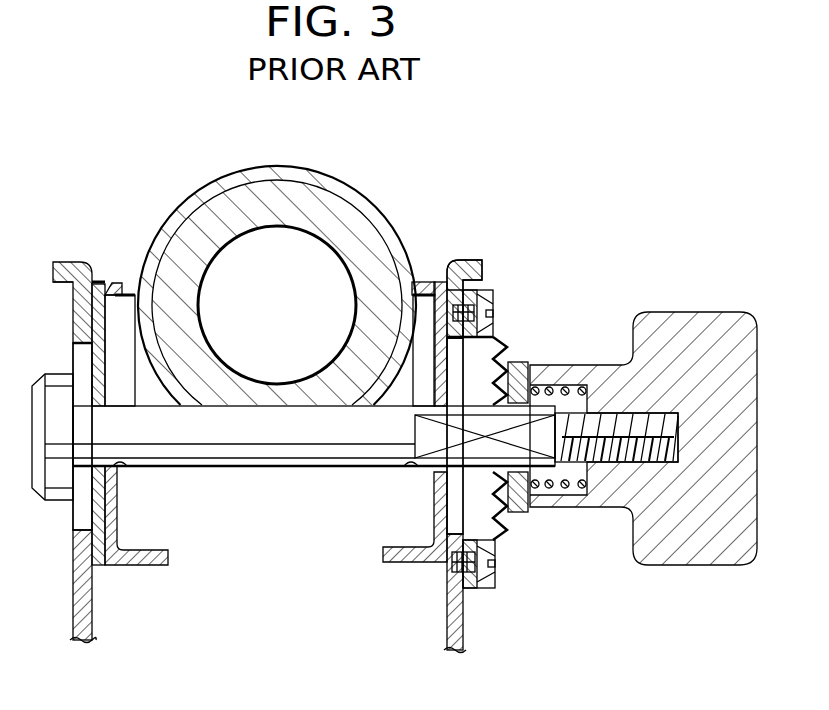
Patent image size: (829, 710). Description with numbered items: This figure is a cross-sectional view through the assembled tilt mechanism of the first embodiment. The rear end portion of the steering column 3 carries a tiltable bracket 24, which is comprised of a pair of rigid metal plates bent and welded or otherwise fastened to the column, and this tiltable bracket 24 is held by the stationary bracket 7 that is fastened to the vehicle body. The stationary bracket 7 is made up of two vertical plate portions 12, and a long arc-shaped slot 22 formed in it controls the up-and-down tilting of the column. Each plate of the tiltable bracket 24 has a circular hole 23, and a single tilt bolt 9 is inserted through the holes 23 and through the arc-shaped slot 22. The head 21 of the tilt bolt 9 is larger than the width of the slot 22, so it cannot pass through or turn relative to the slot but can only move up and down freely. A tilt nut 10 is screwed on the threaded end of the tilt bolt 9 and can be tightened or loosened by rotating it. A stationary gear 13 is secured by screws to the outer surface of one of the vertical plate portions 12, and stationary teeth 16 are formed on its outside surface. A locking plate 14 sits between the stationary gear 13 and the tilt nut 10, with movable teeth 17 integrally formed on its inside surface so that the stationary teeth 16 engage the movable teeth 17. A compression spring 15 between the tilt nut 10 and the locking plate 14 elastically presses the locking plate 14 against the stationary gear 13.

The steering column 3 is at (216, 200).
The stationary bracket 7 is at (463, 262).
The tilt bolt 9 is at (262, 467).
The tilt nut 10 is at (658, 322).
The vertical plate portions 12 is at (90, 598).
The stationary gear 13 is at (477, 503).
The locking plate 14 is at (520, 513).
The compression spring 15 is at (572, 489).
The stationary teeth 16 is at (500, 525).
The movable teeth 17 is at (523, 362).
The head 21 is at (62, 480).
The arc-shaped slot 22 is at (82, 362).
The hole 23 is at (120, 467).
The tiltable bracket 24 is at (119, 283).